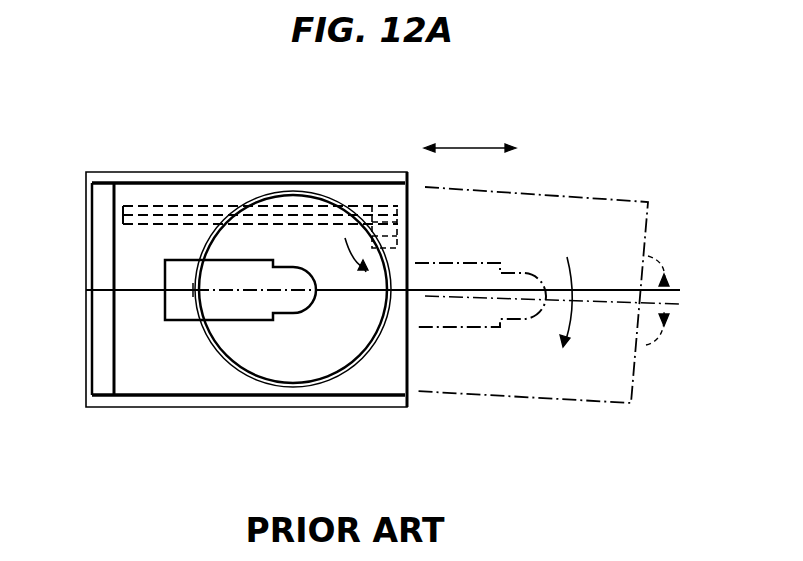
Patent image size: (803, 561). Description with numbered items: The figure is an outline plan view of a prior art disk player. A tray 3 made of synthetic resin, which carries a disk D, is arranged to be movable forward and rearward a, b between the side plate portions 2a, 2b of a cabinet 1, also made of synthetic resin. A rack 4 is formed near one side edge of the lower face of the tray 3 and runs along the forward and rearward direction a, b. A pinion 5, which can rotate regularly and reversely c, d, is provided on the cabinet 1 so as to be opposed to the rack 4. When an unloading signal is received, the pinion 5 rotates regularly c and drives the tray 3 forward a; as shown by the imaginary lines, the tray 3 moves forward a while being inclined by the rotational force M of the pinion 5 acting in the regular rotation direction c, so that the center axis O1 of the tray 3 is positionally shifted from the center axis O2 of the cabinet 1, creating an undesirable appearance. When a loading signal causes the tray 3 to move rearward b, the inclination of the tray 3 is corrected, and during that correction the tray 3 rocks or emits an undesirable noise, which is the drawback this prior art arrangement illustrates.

The cabinet 1 is at (86, 231).
The side plate portion 2a is at (218, 183).
The side plate portion 2b is at (218, 407).
The tray 3 is at (407, 358).
The rack 4 is at (144, 224).
The pinion 5 is at (398, 248).
The disk D is at (200, 353).
The regular rotation direction c is at (345, 253).
The reverse rotation direction d is at (371, 279).
The rotational force M is at (561, 316).
The center axis of the tray O1 is at (655, 341).
The center axis of the cabinet O2 is at (662, 260).
The forward direction a is at (479, 149).
The rearward direction b is at (420, 149).